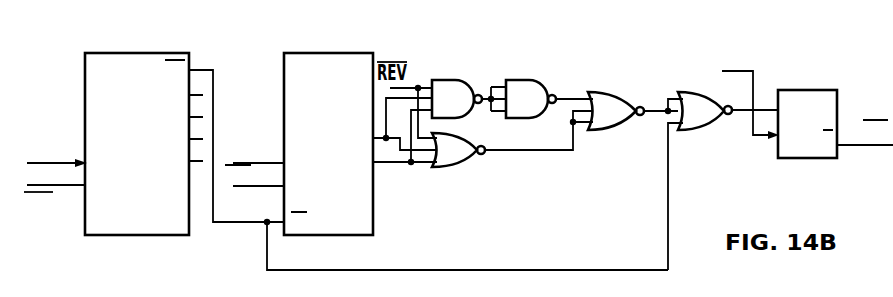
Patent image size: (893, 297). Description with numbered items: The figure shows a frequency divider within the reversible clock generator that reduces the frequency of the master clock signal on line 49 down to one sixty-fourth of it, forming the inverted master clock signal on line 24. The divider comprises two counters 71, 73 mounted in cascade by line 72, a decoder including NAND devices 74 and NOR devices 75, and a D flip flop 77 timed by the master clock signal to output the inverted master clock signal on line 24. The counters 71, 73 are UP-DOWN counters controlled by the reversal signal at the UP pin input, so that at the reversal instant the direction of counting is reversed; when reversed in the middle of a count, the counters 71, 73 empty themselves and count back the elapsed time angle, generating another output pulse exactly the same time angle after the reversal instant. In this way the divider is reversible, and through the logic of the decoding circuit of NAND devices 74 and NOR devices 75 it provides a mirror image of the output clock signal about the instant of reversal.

The counter 71 is at (137, 53).
The line 49 is at (62, 162).
The line 72 is at (244, 222).
The counter 73 is at (320, 53).
The NAND device 74 is at (441, 80).
The NOR device 75 is at (465, 167).
The D flip flop 77 is at (810, 90).
The line 24 is at (862, 148).